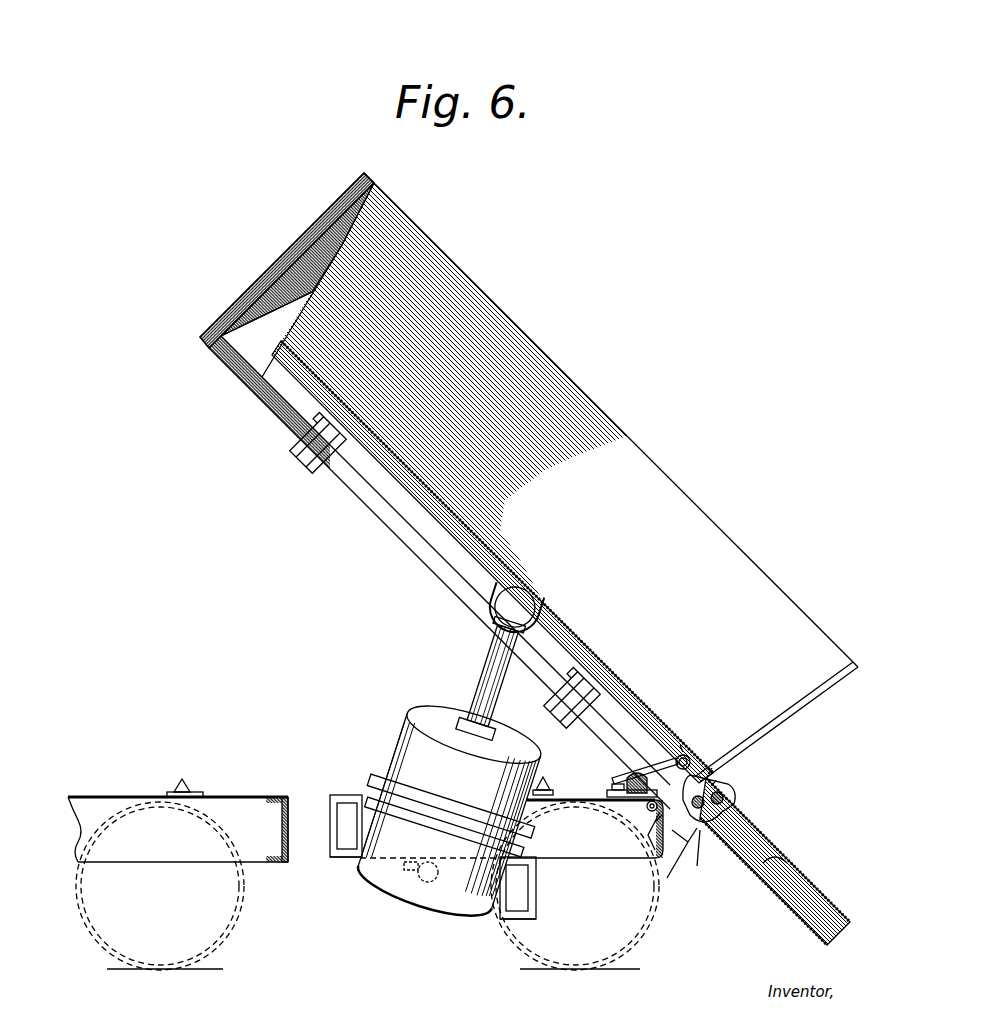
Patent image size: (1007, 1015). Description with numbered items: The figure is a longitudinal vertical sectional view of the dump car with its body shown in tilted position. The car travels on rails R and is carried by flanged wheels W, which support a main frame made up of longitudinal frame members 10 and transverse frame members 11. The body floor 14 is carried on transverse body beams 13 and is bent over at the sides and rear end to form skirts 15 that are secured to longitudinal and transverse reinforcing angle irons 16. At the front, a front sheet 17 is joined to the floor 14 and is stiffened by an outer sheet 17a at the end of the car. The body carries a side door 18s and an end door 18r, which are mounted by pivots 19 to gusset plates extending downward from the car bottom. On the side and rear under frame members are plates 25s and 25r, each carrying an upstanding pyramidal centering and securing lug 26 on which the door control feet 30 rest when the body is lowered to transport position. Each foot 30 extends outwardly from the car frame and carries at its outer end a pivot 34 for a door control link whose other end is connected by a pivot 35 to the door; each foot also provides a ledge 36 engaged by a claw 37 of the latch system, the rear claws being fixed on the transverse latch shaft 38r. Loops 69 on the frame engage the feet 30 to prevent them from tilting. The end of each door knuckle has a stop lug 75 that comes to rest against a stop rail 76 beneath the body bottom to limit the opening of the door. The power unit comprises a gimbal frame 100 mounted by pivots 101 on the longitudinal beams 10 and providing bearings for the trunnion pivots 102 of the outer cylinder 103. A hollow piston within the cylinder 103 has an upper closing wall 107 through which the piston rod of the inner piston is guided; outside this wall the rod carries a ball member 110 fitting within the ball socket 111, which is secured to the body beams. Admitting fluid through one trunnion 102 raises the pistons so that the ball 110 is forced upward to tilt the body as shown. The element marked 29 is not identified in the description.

The longitudinal frame members 10 is at (253, 851).
The transverse frame members 11 is at (290, 801).
The transverse body beams 13 is at (503, 567).
The body floor 14 is at (470, 521).
The skirts 15 is at (700, 866).
The reinforcing angle irons 16 is at (690, 842).
The front sheet 17 is at (348, 244).
The outer sheet 17a is at (280, 258).
The side door 18s is at (655, 462).
The end door 18r is at (758, 848).
The pivots 19 is at (735, 795).
The plate 25s is at (205, 792).
The plate 25r is at (511, 829).
The centering and securing lug 26 is at (192, 766).
The latch bar 29 is at (635, 778).
The door control feet 30 is at (312, 462).
The pivot 34 is at (690, 758).
The pivot 35 is at (707, 810).
The ledge 36 is at (645, 806).
The claw 37 is at (685, 752).
The transverse latch shaft 38r is at (646, 827).
The loops 69 is at (651, 832).
The stop lug 75 is at (712, 786).
The stop rail 76 is at (708, 774).
The gimbal frame 100 is at (342, 858).
The pivots 101 is at (428, 862).
The trunnion pivots 102 is at (340, 840).
The outer cylinder 103 is at (402, 900).
The upper closing wall 107 is at (455, 716).
The ball member 110 is at (514, 608).
The ball socket 111 is at (548, 582).
The flanged wheels W is at (240, 926).
The rails R is at (217, 971).